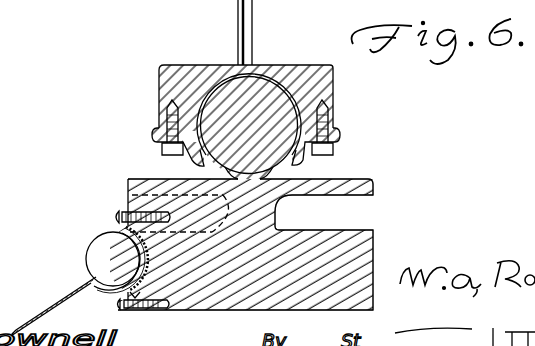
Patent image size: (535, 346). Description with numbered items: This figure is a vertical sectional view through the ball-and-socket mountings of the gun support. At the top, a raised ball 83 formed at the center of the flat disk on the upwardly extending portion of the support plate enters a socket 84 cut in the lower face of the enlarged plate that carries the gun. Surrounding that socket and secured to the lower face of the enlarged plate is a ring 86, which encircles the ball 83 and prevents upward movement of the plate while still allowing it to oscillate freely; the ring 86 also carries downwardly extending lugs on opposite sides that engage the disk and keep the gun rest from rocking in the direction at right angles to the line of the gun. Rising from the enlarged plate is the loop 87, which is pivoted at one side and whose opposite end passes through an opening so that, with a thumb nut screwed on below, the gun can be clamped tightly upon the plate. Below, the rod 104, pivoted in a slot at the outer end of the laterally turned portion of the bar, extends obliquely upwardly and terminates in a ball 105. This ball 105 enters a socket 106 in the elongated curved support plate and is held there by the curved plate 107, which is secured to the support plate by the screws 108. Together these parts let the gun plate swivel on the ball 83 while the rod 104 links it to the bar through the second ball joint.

The ball 83 is at (254, 95).
The socket 84 is at (198, 103).
The ring 86 is at (313, 166).
The loop 87 is at (240, 36).
The rod 104 is at (55, 291).
The ball 105 is at (92, 253).
The socket 106 is at (152, 276).
The curved plate 107 is at (117, 215).
The screws 108 is at (122, 306).